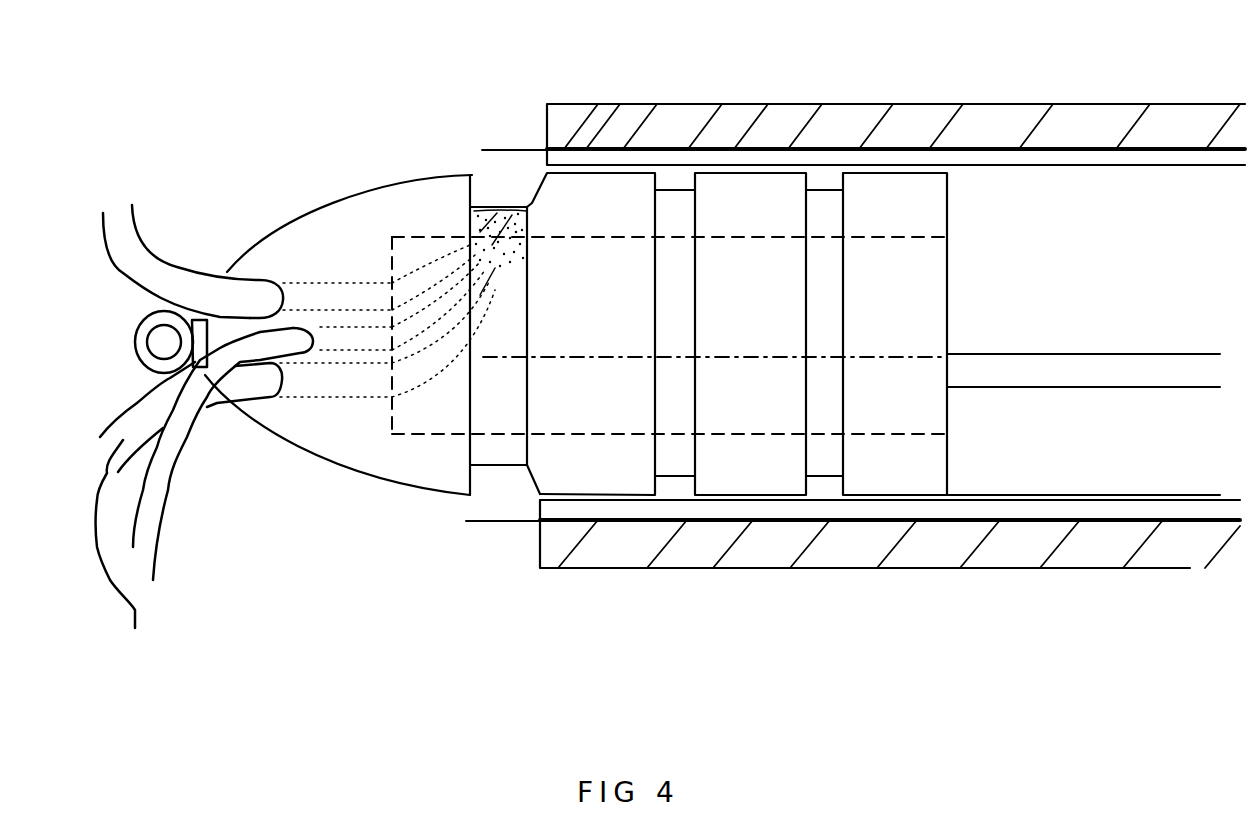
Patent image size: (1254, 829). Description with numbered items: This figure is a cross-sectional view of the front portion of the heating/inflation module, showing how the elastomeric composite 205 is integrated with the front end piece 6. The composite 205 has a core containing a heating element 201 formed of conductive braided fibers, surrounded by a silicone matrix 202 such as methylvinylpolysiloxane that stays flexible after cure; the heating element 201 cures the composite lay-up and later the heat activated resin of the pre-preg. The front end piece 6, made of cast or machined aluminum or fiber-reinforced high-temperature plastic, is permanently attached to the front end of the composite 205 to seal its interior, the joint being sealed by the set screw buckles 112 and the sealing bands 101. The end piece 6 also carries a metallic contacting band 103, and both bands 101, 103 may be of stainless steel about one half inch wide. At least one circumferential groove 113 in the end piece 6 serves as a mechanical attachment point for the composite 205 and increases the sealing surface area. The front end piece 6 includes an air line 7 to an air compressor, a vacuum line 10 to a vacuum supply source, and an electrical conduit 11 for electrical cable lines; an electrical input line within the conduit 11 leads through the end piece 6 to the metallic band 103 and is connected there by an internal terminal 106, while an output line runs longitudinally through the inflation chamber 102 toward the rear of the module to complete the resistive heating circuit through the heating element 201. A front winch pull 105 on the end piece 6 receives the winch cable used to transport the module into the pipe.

The front end piece 6 is at (345, 218).
The air line 7 is at (192, 285).
The vacuum line 10 is at (168, 462).
The electrical conduit 11 is at (189, 513).
The front winch pull 105 is at (137, 330).
The internal terminal 106 is at (452, 260).
The metallic contacting band 103 is at (470, 223).
The set screw buckle 112 is at (497, 203).
The circumferential groove 113 is at (527, 463).
The sealing band 101 is at (823, 182).
The inflation chamber 102 is at (1047, 233).
The heating element 201 is at (513, 150).
The silicone matrix 202 is at (608, 158).
The elastomeric composite 205 is at (1187, 86).